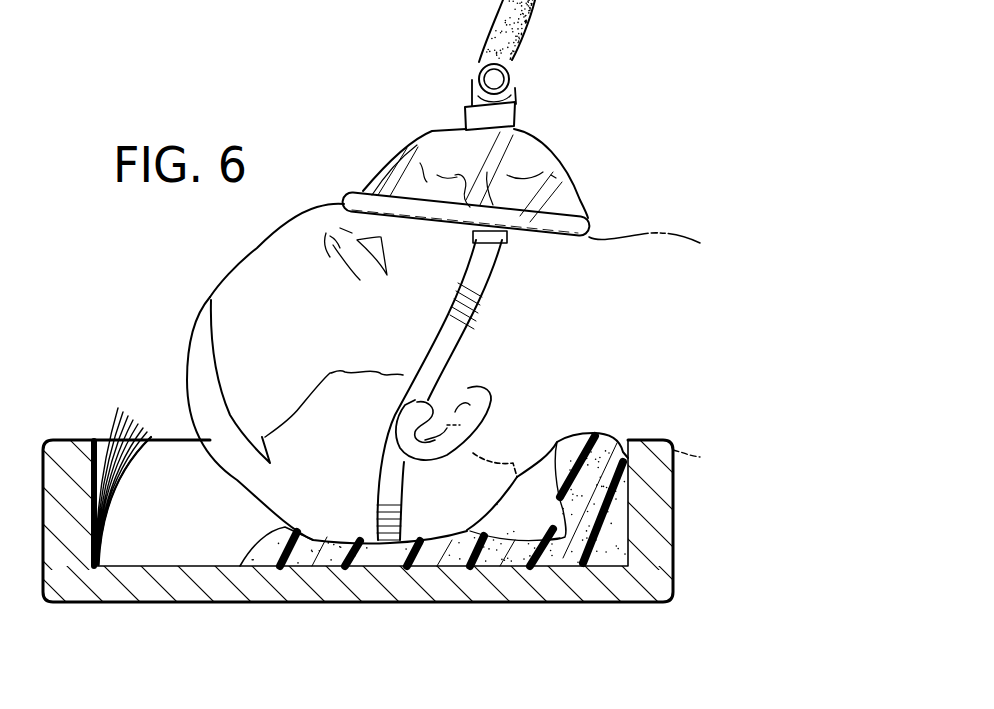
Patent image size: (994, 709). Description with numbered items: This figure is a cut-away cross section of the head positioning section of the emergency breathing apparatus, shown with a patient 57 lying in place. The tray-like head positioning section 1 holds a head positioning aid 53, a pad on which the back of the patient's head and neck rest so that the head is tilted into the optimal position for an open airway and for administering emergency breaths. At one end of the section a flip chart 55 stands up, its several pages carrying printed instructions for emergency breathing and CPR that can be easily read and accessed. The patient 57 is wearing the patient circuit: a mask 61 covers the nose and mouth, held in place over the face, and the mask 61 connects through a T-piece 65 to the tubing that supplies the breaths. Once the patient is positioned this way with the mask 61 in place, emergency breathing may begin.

The head support tray 1 is at (172, 603).
The head positioning aid 53 is at (550, 553).
The flip chart 55 is at (127, 466).
The patient 57 is at (186, 346).
The mask 61 is at (410, 153).
The T-piece 65 is at (472, 88).